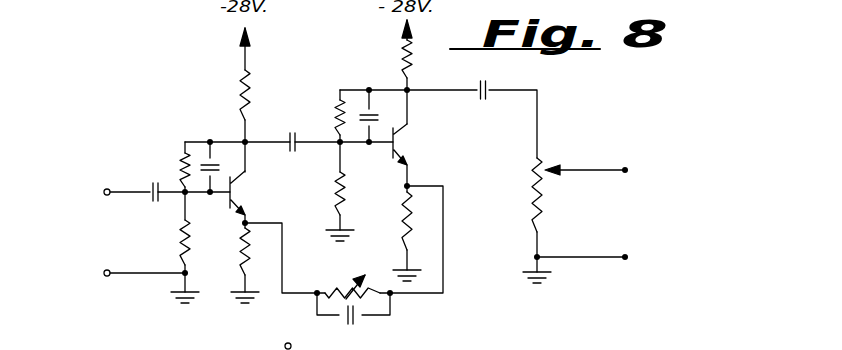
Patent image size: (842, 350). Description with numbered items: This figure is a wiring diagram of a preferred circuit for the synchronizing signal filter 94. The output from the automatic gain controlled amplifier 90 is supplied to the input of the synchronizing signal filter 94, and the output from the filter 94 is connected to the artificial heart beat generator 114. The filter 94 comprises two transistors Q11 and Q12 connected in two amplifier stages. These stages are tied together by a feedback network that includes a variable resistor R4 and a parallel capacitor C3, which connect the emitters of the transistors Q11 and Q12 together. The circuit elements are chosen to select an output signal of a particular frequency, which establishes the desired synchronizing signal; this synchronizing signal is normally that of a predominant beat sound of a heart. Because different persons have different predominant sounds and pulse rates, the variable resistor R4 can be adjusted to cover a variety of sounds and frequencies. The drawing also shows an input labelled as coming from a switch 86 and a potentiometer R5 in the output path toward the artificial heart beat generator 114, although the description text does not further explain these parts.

The synchronizing signal filter 94 is at (202, 105).
The automatic gain controlled amplifier 90 is at (95, 234).
The switch 86 is at (225, 333).
The artificial heart beat generator 114 is at (636, 215).
The transistor Q11 is at (257, 193).
The transistor Q12 is at (418, 144).
The variable resistor R4 is at (353, 283).
The capacitor C3 is at (353, 315).
The potentiometer R5 is at (586, 254).